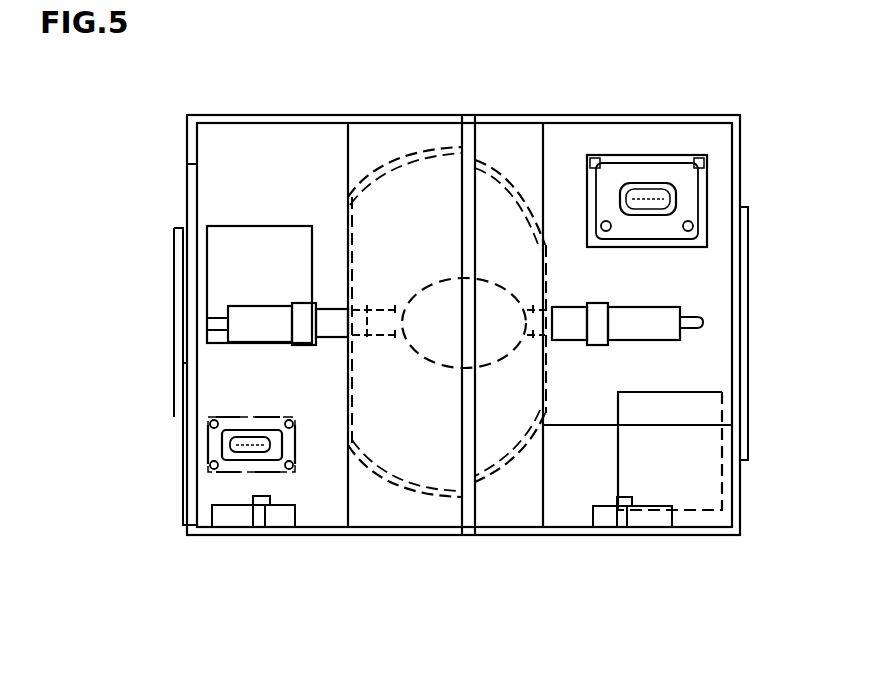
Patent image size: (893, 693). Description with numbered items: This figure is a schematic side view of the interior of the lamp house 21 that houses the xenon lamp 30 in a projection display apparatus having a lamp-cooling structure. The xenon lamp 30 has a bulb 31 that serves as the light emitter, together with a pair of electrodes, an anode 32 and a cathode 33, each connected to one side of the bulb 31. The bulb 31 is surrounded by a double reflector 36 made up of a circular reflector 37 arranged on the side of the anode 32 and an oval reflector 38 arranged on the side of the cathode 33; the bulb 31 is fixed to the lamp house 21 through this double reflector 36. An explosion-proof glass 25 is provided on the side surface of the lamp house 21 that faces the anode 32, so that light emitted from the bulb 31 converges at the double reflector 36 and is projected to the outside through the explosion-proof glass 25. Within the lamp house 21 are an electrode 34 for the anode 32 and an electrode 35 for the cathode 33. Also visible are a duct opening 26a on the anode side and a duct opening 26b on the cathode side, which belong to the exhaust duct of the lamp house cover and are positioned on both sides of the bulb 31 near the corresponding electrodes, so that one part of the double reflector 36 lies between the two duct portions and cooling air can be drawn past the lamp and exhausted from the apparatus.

The lamp house 21 is at (283, 115).
The explosion-proof glass 25 is at (174, 278).
The duct opening on the anode side 26a is at (246, 235).
The duct opening on the cathode side 26b is at (703, 455).
The xenon lamp 30 is at (446, 104).
The bulb 31 is at (485, 300).
The anode 32 is at (256, 345).
The cathode 33 is at (663, 341).
The electrode for anode 34 is at (208, 443).
The electrode for cathode 35 is at (703, 172).
The double reflector 36 is at (447, 380).
The circular reflector 37 is at (400, 490).
The oval reflector 38 is at (510, 366).